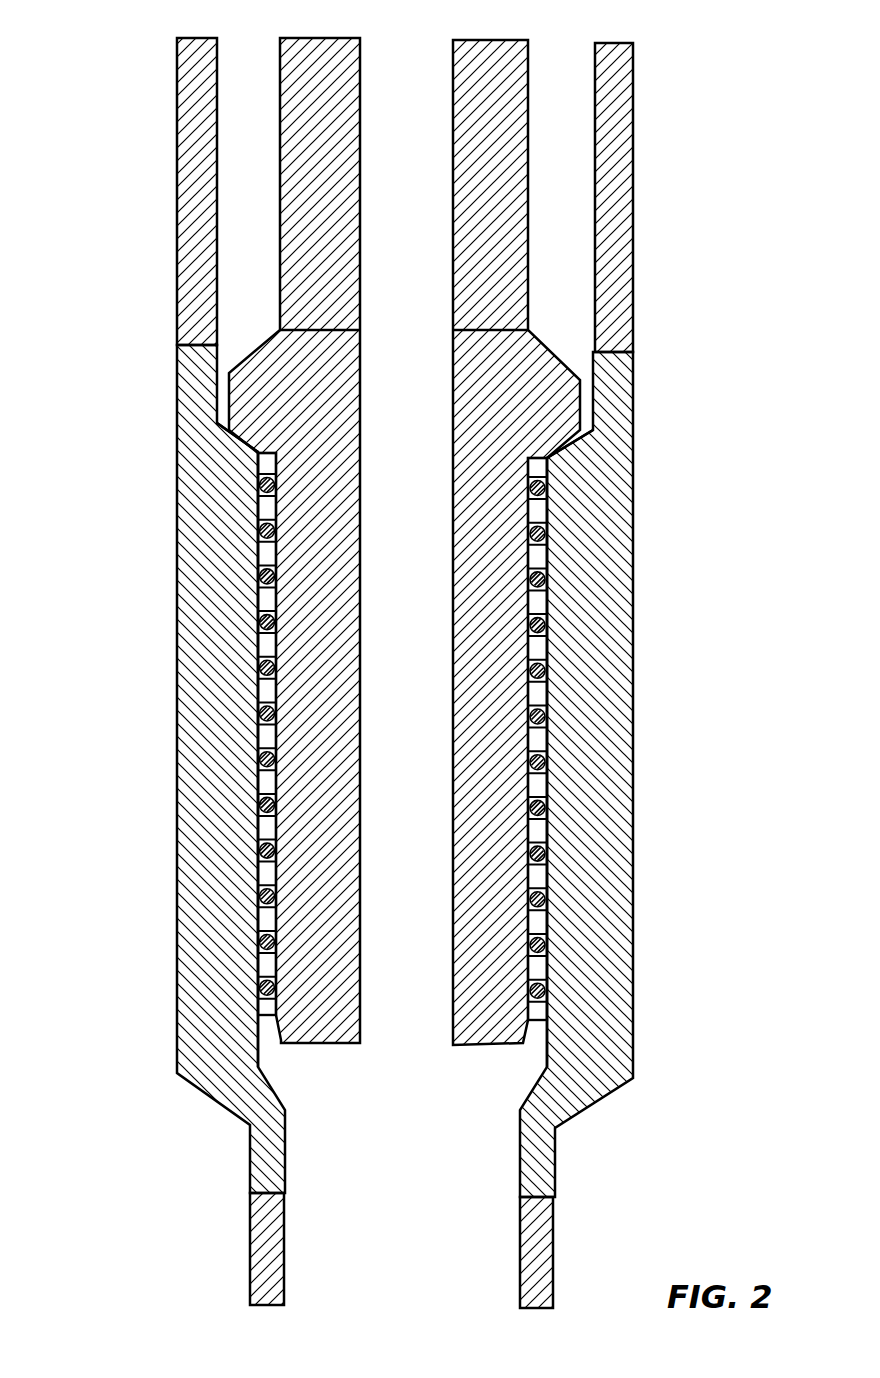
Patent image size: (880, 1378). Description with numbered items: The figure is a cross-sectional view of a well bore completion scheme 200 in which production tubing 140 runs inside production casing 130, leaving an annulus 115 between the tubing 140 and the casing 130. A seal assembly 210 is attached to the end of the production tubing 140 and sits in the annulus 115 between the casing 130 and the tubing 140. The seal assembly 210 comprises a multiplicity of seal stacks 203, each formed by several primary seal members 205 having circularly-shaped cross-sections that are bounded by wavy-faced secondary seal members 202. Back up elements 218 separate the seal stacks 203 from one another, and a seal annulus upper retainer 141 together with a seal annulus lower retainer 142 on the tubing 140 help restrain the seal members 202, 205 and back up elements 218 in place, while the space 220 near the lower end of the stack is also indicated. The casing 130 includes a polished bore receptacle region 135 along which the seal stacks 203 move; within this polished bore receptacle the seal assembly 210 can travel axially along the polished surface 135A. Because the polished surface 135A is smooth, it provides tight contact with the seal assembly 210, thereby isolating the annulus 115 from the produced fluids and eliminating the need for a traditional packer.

The well bore completion scheme 200 is at (126, 185).
The production casing 130 is at (182, 78).
The annulus 115 is at (240, 62).
The production tubing 140 is at (328, 48).
The seal assembly 210 is at (240, 390).
The seal annulus upper retainer 141 is at (250, 456).
The polished bore receptacle region 135 is at (187, 667).
The polished surface 135A is at (258, 712).
The seal stack 203 is at (250, 569).
The primary seal member 205 is at (258, 628).
The secondary seal member 202 is at (258, 810).
The back up element 218 is at (258, 855).
The space 220 is at (247, 940).
The seal annulus lower retainer 142 is at (285, 1047).